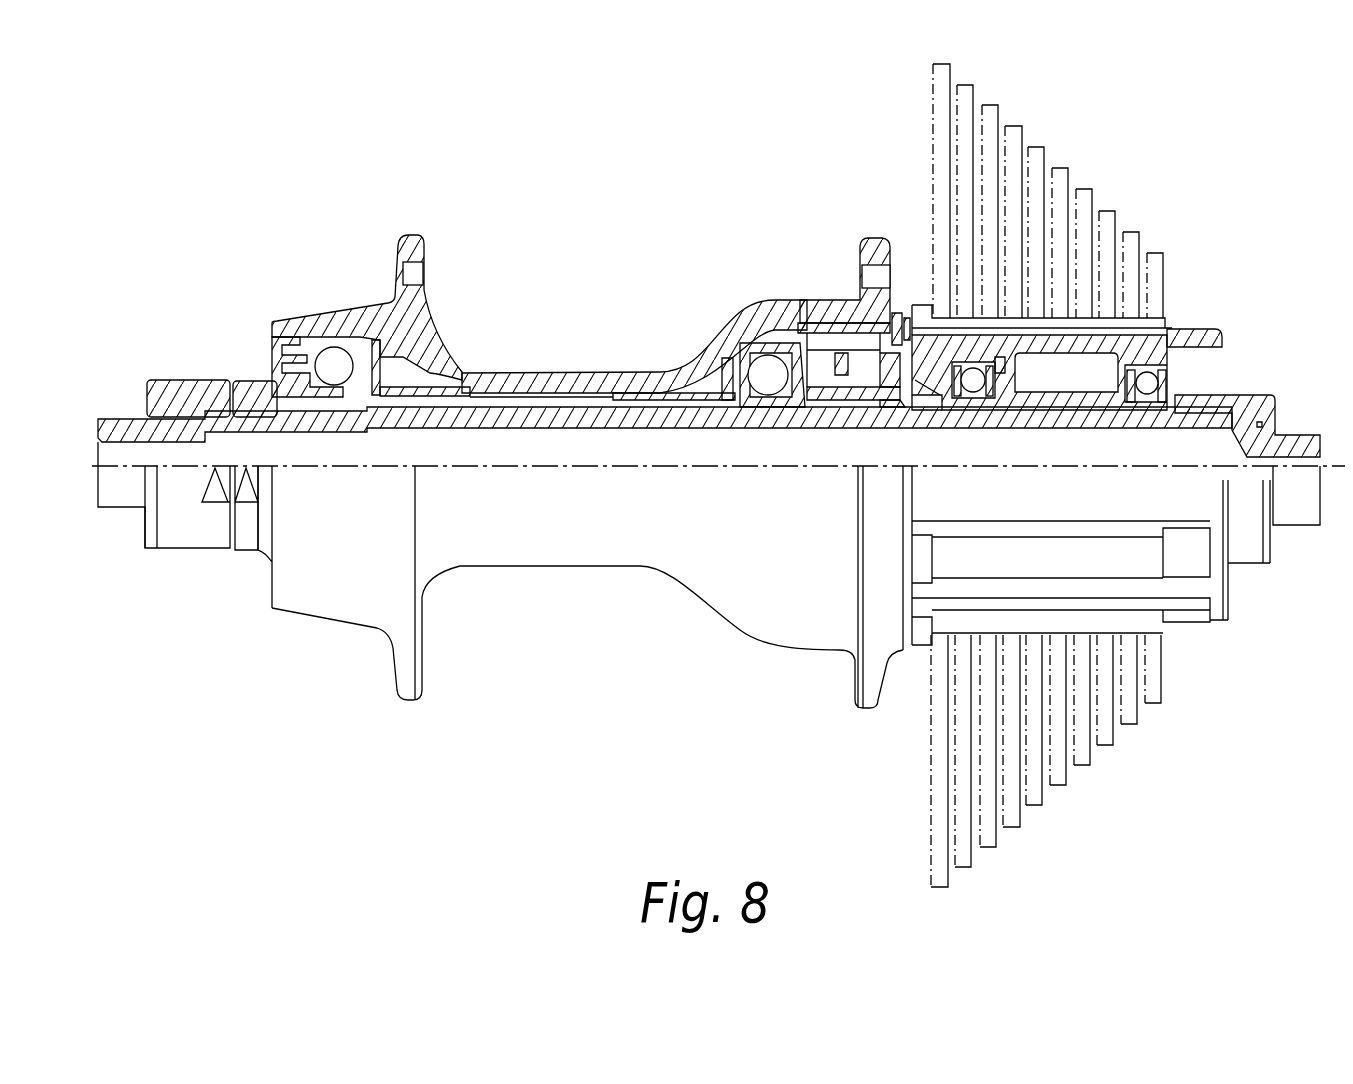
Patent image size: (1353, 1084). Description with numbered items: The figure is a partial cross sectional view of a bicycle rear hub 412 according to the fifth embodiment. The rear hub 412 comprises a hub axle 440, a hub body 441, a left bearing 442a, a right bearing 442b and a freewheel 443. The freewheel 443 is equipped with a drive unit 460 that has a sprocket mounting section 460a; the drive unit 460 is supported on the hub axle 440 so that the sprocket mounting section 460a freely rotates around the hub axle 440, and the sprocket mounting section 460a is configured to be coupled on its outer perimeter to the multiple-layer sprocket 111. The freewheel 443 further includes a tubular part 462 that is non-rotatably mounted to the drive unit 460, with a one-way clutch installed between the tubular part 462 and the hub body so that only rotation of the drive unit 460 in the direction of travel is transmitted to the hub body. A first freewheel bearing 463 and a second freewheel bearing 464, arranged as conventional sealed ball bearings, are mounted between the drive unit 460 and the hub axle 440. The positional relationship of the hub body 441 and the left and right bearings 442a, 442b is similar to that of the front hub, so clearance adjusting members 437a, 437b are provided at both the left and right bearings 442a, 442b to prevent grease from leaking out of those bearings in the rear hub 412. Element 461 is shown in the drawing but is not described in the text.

The multiple-layer sprocket 111 is at (932, 125).
The rear hub 412 is at (596, 325).
The clearance adjusting member 437a is at (435, 384).
The clearance adjusting member 437b is at (700, 392).
The hub axle 440 is at (636, 405).
The hub body 441 is at (545, 372).
The left bearing 442a is at (342, 308).
The right bearing 442b is at (772, 340).
The freewheel 443 is at (1182, 320).
The drive unit 460 is at (1072, 328).
The sprocket mounting section 460a is at (1125, 332).
The bearing cup 461 is at (833, 352).
The tubular part 462 is at (895, 325).
The first freewheel bearing 463 is at (972, 345).
The second freewheel bearing 464 is at (1165, 372).